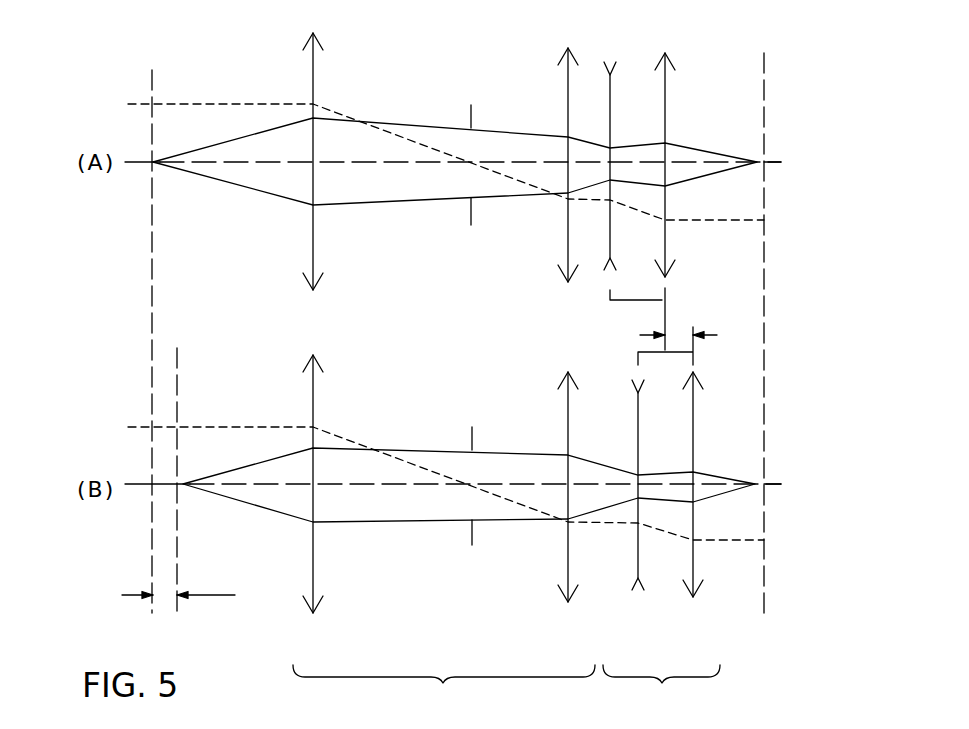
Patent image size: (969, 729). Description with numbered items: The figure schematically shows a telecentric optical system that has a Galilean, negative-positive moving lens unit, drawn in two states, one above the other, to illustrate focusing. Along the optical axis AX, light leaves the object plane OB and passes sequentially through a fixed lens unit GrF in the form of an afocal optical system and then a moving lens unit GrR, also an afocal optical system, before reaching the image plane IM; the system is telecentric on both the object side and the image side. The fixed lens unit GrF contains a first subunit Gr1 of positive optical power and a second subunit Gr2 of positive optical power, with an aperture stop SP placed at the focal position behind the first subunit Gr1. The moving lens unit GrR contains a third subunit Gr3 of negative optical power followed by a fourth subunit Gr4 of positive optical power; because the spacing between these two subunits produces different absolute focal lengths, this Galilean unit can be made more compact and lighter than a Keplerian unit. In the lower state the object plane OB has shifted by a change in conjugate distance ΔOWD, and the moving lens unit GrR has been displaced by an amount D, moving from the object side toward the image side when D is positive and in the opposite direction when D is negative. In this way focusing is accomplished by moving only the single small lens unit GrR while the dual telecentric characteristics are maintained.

The object plane OB is at (152, 83).
The first subunit Gr1 is at (316, 329).
The aperture stop SP is at (471, 113).
The second subunit Gr2 is at (572, 325).
The third subunit Gr3 is at (627, 330).
The fourth subunit Gr4 is at (685, 323).
The movement amount of the moving lens unit D is at (663, 326).
The image plane IM is at (764, 82).
The optical axis AX is at (780, 162).
The change in the conjugate distance OWD is at (197, 585).
The fixed lens unit GrF is at (444, 691).
The moving lens unit GrR is at (661, 691).